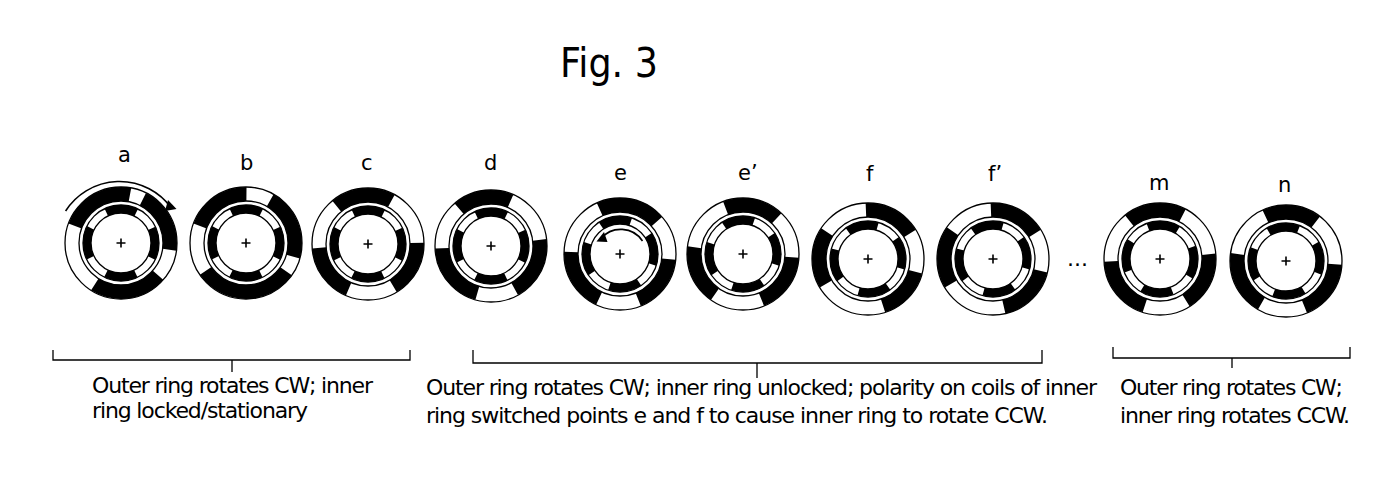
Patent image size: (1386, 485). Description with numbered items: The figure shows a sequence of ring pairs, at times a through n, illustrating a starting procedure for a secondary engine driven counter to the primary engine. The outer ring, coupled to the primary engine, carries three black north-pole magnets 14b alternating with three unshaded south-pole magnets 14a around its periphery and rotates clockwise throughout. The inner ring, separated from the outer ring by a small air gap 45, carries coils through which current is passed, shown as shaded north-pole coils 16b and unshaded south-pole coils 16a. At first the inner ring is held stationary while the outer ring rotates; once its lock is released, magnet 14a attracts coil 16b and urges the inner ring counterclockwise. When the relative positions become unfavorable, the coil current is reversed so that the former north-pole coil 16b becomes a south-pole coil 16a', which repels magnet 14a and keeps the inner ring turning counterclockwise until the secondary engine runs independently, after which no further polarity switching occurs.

The south-pole magnets 14a is at (80, 268).
The north-pole magnets 14b is at (80, 208).
The south-pole coils 16a is at (703, 261).
The south-pole coil 16a' is at (870, 281).
The north-pole coils 16b is at (132, 282).
The air gap 45 is at (121, 287).